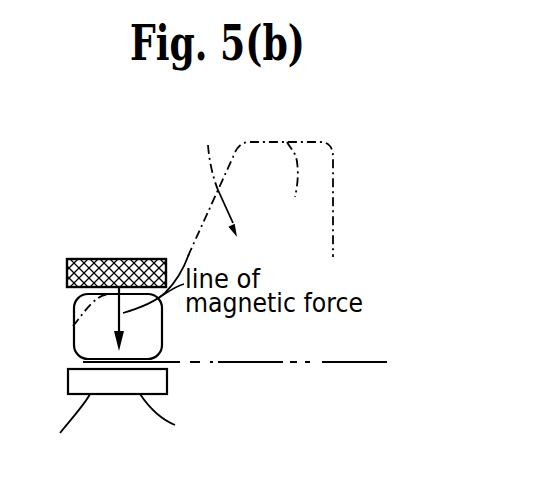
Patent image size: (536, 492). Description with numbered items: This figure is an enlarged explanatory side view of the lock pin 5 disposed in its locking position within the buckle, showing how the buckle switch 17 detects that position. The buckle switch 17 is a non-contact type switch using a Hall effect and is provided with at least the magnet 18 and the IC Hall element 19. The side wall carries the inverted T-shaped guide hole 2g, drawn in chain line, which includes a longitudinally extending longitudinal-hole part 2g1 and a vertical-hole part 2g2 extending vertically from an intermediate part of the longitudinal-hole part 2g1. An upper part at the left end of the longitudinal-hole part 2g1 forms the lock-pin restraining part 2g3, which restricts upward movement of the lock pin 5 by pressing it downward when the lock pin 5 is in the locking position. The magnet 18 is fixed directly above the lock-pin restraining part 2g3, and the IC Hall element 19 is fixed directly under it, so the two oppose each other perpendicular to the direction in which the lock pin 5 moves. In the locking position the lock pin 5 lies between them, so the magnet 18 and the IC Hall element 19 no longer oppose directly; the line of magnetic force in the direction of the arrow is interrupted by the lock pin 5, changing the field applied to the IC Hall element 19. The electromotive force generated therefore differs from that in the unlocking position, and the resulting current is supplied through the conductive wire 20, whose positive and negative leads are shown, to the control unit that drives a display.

The buckle switch 17 is at (49, 261).
The magnet 18 is at (122, 260).
The IC Hall element 19 is at (68, 388).
The conductive wire 20 is at (72, 423).
The inverted T-shaped guide hole 2g is at (208, 145).
The longitudinal-hole part 2g1 is at (233, 359).
The vertical-hole part 2g2 is at (286, 185).
The lock-pin restraining part 2g3 is at (75, 323).
The lock pin 5 is at (154, 344).